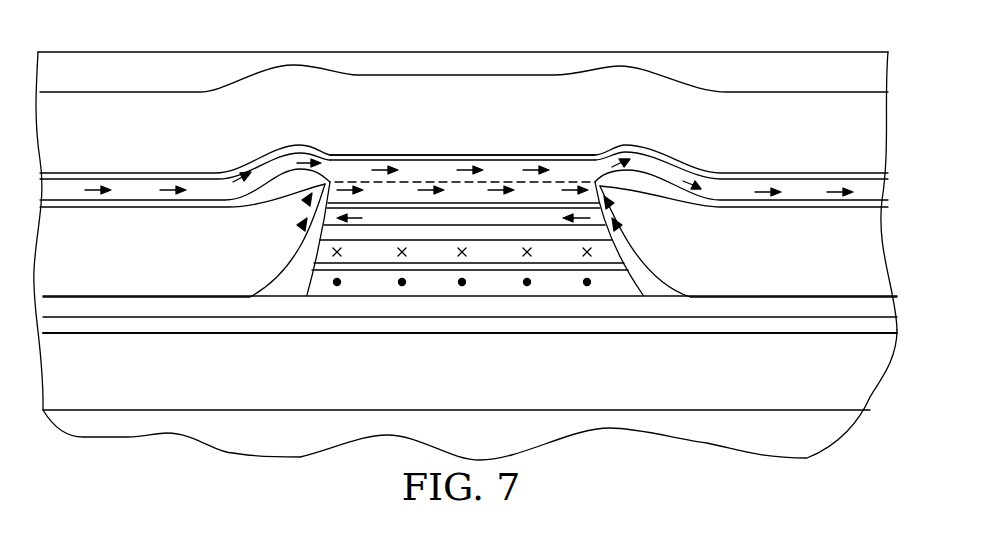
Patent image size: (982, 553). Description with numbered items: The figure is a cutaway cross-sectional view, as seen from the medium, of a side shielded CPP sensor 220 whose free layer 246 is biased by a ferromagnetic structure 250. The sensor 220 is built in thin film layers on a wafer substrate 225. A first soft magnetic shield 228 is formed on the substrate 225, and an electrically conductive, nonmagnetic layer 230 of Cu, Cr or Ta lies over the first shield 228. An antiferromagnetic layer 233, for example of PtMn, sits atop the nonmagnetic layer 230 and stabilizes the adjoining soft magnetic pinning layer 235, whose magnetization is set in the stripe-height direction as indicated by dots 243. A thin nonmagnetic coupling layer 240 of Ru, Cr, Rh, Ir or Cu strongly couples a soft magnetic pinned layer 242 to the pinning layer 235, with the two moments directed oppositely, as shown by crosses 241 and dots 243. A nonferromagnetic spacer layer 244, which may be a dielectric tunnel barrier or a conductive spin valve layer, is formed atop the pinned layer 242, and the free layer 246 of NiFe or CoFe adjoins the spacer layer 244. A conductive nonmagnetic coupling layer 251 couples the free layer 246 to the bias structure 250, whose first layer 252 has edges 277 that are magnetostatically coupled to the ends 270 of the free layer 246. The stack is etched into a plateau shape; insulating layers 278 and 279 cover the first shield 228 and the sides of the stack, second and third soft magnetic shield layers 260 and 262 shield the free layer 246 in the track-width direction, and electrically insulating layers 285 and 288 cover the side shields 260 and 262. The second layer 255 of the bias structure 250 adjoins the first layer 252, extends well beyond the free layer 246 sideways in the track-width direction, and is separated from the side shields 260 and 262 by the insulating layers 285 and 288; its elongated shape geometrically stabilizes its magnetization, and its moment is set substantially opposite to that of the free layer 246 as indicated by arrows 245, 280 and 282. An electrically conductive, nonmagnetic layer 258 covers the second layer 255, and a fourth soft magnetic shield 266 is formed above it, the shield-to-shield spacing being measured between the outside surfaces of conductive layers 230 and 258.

The side shielded CPP sensor 220 is at (196, 79).
The wafer substrate 225 is at (497, 439).
The first soft magnetic shield 228 is at (784, 384).
The electrically conductive, nonmagnetic layer 230 is at (145, 333).
The antiferromagnetic layer 233 is at (603, 318).
The pinning layer 235 is at (307, 297).
The nonmagnetic coupling layer 240 is at (500, 272).
The crosses 241 is at (331, 251).
The pinned layer 242 is at (430, 264).
The dots 243 is at (591, 283).
The spacer layer 244 is at (367, 241).
The arrow 245 is at (307, 157).
The free layer 246 is at (445, 207).
The ferromagnetic structure 250 is at (528, 160).
The nonmagnetic coupling layer 251 is at (560, 190).
The first layer 252 is at (487, 175).
The second layer 255 is at (355, 158).
The electrically conductive, nonmagnetic layer 258 is at (405, 155).
The second soft magnetic shield layer 260 is at (99, 265).
The third soft magnetic shield layer 262 is at (867, 260).
The fourth soft magnetic shield 266 is at (99, 139).
The ends of the free layer 270 is at (302, 224).
The edges of the first layer 277 is at (307, 199).
The insulating layer 278 is at (146, 297).
The insulating layer 279 is at (773, 297).
The arrow 280 is at (573, 226).
The arrow 282 is at (593, 180).
The electrically insulating layer 285 is at (147, 200).
The electrically insulating layer 288 is at (738, 200).